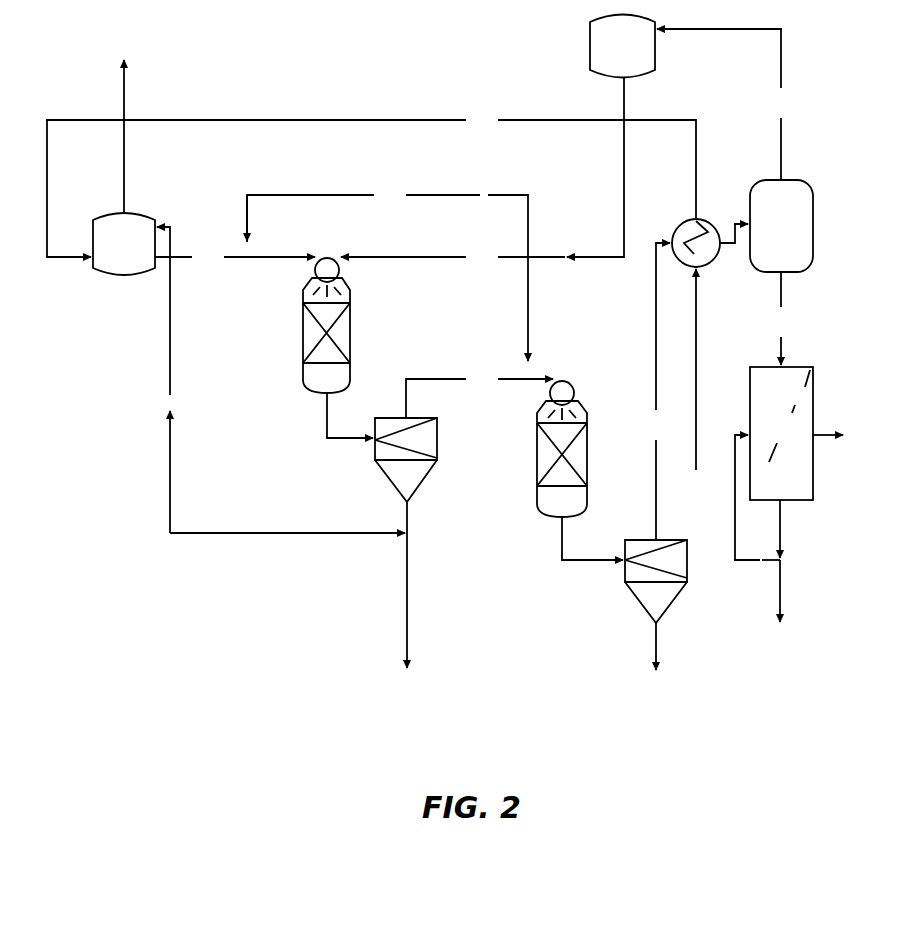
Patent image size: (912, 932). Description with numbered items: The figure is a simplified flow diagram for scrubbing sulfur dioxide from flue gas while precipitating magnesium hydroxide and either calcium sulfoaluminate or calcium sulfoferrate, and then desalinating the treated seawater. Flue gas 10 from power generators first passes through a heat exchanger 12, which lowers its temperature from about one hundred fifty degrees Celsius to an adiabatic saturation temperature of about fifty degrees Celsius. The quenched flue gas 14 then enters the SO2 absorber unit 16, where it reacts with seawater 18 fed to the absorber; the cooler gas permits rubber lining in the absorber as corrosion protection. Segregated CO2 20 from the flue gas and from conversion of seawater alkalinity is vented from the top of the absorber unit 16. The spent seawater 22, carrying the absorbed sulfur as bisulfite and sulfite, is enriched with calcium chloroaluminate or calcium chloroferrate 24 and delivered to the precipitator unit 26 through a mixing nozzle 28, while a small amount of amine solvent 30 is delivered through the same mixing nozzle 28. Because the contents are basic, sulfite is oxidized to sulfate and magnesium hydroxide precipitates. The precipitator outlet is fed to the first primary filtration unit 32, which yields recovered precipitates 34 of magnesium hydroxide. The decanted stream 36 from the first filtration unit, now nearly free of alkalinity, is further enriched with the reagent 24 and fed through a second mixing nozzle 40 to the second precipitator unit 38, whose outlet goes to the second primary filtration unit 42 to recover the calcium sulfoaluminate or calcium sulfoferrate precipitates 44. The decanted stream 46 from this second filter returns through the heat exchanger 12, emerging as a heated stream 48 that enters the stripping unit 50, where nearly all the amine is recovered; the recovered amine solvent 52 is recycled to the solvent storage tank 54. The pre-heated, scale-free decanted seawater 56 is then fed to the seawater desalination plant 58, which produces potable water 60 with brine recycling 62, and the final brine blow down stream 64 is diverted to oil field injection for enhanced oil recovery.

The flue gas 10 is at (693, 382).
The heat exchanger 12 is at (696, 243).
The quenched flue gas 14 is at (356, 189).
The SO2 absorber unit 16 is at (124, 244).
The seawater 18 is at (156, 380).
The segregated CO2 20 is at (122, 122).
The spent seawater 22 is at (235, 257).
The calcium chloroaluminate or calcium chloroferrate 24 is at (387, 273).
The precipitator unit 26 is at (338, 358).
The mixing nozzle 28 is at (327, 270).
The amine solvent 30 is at (482, 173).
The first primary filtration unit 32 is at (406, 460).
The recovered precipitates 34 is at (288, 549).
The decanted stream 36 is at (479, 393).
The second precipitator unit 38 is at (580, 480).
The mixing nozzle 40 is at (562, 393).
The second primary filtration unit 42 is at (656, 581).
The precipitates of calcium sulfoaluminate or calcium sulfoferrate 44 is at (641, 646).
The decanted stream 46 is at (656, 391).
The heated decanted stream 48 is at (734, 221).
The stripping unit 50 is at (781, 226).
The recovered amine solvent 52 is at (725, 104).
The solvent storage tank 54 is at (622, 46).
The decanted seawater 56 is at (780, 318).
The seawater desalination plant 58 is at (781, 433).
The potable water 60 is at (828, 421).
The brine recycling 62 is at (757, 503).
The final brine blow down stream 64 is at (779, 578).